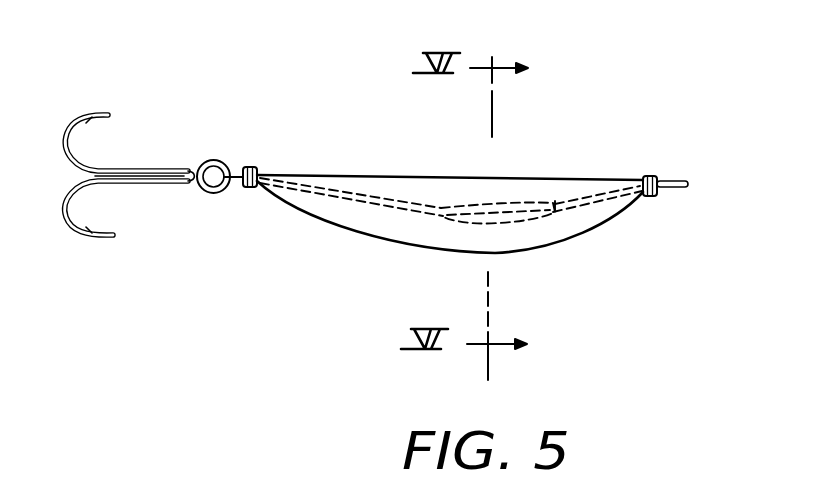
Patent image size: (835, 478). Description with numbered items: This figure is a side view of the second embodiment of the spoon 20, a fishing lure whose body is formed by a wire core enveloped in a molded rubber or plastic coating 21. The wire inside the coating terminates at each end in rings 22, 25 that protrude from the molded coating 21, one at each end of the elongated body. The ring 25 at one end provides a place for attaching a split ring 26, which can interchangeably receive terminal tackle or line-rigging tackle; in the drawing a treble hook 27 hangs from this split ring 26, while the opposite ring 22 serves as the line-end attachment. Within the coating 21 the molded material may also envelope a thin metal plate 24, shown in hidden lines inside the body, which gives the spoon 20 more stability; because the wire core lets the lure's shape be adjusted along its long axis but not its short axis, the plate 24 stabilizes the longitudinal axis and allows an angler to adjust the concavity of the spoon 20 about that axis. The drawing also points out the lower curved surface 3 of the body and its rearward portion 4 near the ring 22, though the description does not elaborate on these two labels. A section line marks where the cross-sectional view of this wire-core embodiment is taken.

The bottom surface of lure body 3 is at (362, 237).
The rear portion of lure body 4 is at (630, 228).
The spoon 20 is at (480, 206).
The molded rubber or plastic coating 21 is at (445, 177).
The ring 22 is at (678, 181).
The thin metal plate 24 is at (530, 218).
The ring 25 is at (240, 172).
The split ring 26 is at (213, 194).
The treble hook 27 is at (86, 116).